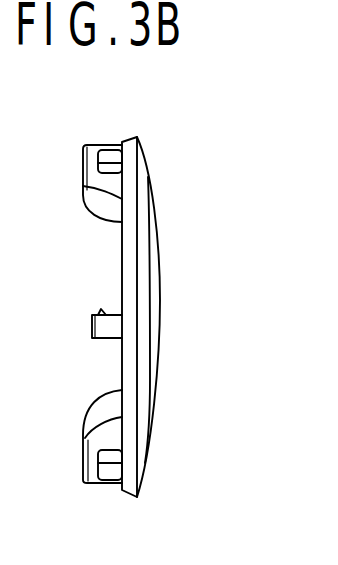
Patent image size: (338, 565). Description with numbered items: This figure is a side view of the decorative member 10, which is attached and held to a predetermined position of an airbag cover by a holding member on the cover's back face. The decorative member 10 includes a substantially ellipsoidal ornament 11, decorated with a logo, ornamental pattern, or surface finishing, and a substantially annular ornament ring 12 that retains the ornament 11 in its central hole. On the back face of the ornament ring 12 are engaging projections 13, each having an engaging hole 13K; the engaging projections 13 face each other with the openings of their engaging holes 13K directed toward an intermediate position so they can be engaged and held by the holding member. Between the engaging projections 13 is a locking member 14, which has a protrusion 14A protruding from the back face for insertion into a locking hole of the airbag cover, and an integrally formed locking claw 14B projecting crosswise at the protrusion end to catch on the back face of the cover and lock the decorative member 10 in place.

The decorative member 10 is at (119, 314).
The ornament 11 is at (158, 247).
The ornament ring 12 is at (122, 240).
The engaging projection 13 is at (84, 173).
The engaging hole 13K is at (110, 172).
The locking member 14 is at (72, 328).
The protrusion 14A is at (105, 339).
The locking claw 14B is at (97, 309).